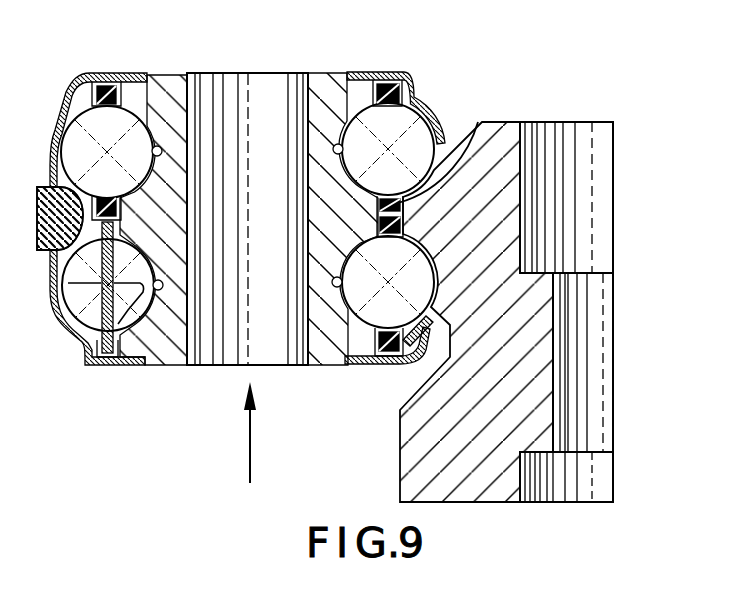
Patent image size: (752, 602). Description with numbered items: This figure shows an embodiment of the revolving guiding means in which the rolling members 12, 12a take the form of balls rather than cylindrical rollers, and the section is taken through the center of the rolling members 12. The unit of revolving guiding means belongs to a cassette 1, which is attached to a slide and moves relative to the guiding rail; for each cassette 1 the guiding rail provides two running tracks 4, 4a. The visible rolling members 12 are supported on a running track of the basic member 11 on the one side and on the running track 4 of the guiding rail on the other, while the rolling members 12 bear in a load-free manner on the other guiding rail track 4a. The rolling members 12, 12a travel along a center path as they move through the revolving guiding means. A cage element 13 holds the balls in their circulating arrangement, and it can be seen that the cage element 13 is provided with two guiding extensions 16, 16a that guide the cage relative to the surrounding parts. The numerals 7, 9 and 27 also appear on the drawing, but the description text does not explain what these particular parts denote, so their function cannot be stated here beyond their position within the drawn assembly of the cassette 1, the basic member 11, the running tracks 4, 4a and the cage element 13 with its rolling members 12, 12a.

The cassette 1 is at (250, 448).
The running track 4 is at (425, 168).
The running track 4a is at (422, 275).
The spacer seal 7 is at (357, 231).
The hub inner ring 9 is at (145, 231).
The basic member 11 is at (330, 198).
The rolling member 12 is at (356, 140).
The rolling member 12a is at (358, 297).
The cage element 13 is at (130, 300).
The guiding extension 16 is at (386, 90).
The guiding extension 16a is at (478, 122).
The seal cover 27 is at (97, 343).